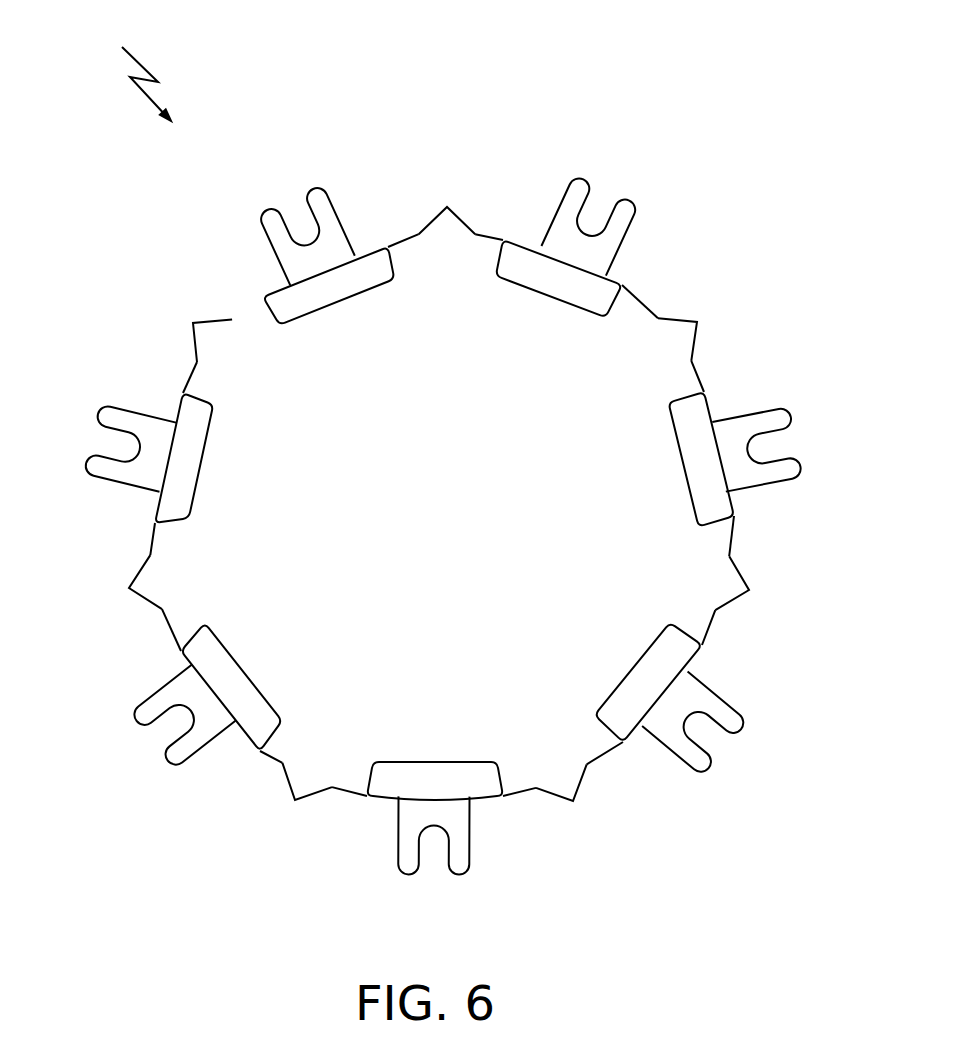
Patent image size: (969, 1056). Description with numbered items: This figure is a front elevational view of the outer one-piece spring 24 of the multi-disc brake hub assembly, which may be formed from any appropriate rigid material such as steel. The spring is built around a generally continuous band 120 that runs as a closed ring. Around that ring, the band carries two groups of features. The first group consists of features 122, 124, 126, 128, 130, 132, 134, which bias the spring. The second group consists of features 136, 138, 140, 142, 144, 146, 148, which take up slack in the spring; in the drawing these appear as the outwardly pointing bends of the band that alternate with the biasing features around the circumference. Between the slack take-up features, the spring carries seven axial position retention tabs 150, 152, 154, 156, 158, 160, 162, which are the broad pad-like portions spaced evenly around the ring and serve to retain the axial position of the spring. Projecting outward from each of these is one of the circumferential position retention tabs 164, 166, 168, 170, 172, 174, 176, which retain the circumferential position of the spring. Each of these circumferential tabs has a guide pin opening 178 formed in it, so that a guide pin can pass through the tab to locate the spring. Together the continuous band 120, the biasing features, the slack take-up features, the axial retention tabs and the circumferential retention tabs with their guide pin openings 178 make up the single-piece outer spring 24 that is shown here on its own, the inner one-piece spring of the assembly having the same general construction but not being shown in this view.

The outer one-piece spring 24 is at (128, 67).
The continuous band 120 is at (500, 236).
The biasing feature 122 is at (372, 232).
The biasing feature 124 is at (633, 287).
The biasing feature 126 is at (738, 504).
The biasing feature 128 is at (636, 737).
The biasing feature 130 is at (388, 802).
The biasing feature 132 is at (182, 662).
The biasing feature 134 is at (172, 386).
The slack take-up feature 136 is at (447, 205).
The slack take-up feature 138 is at (700, 321).
The slack take-up feature 140 is at (750, 592).
The slack take-up feature 142 is at (574, 805).
The slack take-up feature 144 is at (295, 803).
The slack take-up feature 146 is at (128, 588).
The slack take-up feature 148 is at (193, 320).
The axial position retention tab 150 is at (338, 313).
The axial position retention tab 152 is at (552, 312).
The axial position retention tab 154 is at (675, 465).
The axial position retention tab 156 is at (632, 665).
The axial position retention tab 158 is at (433, 760).
The axial position retention tab 160 is at (250, 670).
The axial position retention tab 162 is at (210, 466).
The circumferential position retention tab 164 is at (265, 238).
The circumferential position retention tab 166 is at (560, 198).
The circumferential position retention tab 168 is at (768, 412).
The circumferential position retention tab 170 is at (720, 700).
The circumferential position retention tab 172 is at (470, 860).
The circumferential position retention tab 174 is at (188, 763).
The circumferential position retention tab 176 is at (98, 482).
The guide pin opening 178 is at (442, 529).